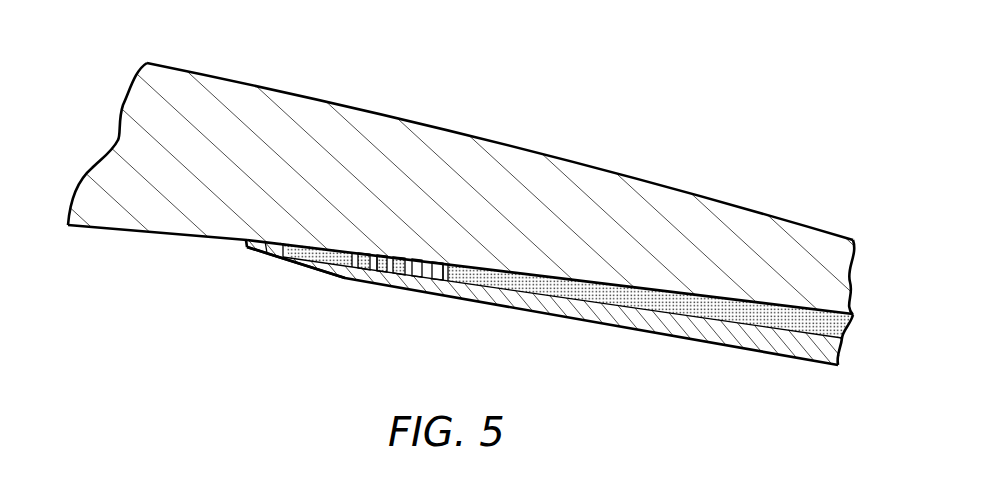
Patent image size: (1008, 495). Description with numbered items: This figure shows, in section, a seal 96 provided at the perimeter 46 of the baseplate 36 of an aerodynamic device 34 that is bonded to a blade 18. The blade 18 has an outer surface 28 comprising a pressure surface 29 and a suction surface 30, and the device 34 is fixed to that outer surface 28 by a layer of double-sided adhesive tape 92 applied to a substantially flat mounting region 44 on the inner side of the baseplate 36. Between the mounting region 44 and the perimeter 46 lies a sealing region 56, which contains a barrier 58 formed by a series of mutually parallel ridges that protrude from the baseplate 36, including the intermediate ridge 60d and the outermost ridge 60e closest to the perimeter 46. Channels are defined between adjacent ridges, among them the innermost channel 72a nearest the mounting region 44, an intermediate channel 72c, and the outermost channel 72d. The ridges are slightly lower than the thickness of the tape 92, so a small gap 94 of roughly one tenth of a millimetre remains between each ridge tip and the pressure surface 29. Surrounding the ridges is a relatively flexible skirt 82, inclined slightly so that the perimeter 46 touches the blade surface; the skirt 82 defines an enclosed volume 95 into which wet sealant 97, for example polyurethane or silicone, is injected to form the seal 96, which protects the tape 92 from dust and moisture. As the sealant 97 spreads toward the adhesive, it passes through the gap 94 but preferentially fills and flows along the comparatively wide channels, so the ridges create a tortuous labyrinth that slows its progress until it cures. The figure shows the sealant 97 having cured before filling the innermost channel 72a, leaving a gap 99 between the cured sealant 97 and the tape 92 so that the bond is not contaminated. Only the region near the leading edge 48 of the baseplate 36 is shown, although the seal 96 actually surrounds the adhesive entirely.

The blade 18 is at (118, 97).
The outer surface 28 is at (590, 166).
The suction surface 30 is at (327, 108).
The pressure surface 29 is at (100, 228).
The aerodynamic device 34 is at (652, 354).
The baseplate 36 is at (585, 313).
The mounting region 44 is at (750, 325).
The perimeter 46 is at (249, 252).
The leading edge 48 is at (246, 243).
The sealing region 56 is at (266, 241).
The barrier 58 is at (418, 294).
The intermediate ridge 60d is at (378, 272).
The outermost ridge 60e is at (360, 272).
The innermost channel 72a is at (440, 259).
The intermediate channel 72c is at (382, 253).
The outermost channel 72d is at (363, 252).
The skirt 82 is at (314, 272).
The double-sided adhesive tape 92 is at (532, 288).
The gap 94 is at (416, 256).
The enclosed volume 95 is at (296, 244).
The seal 96 is at (320, 246).
The sealant 97 is at (284, 262).
The gap 99 is at (441, 281).